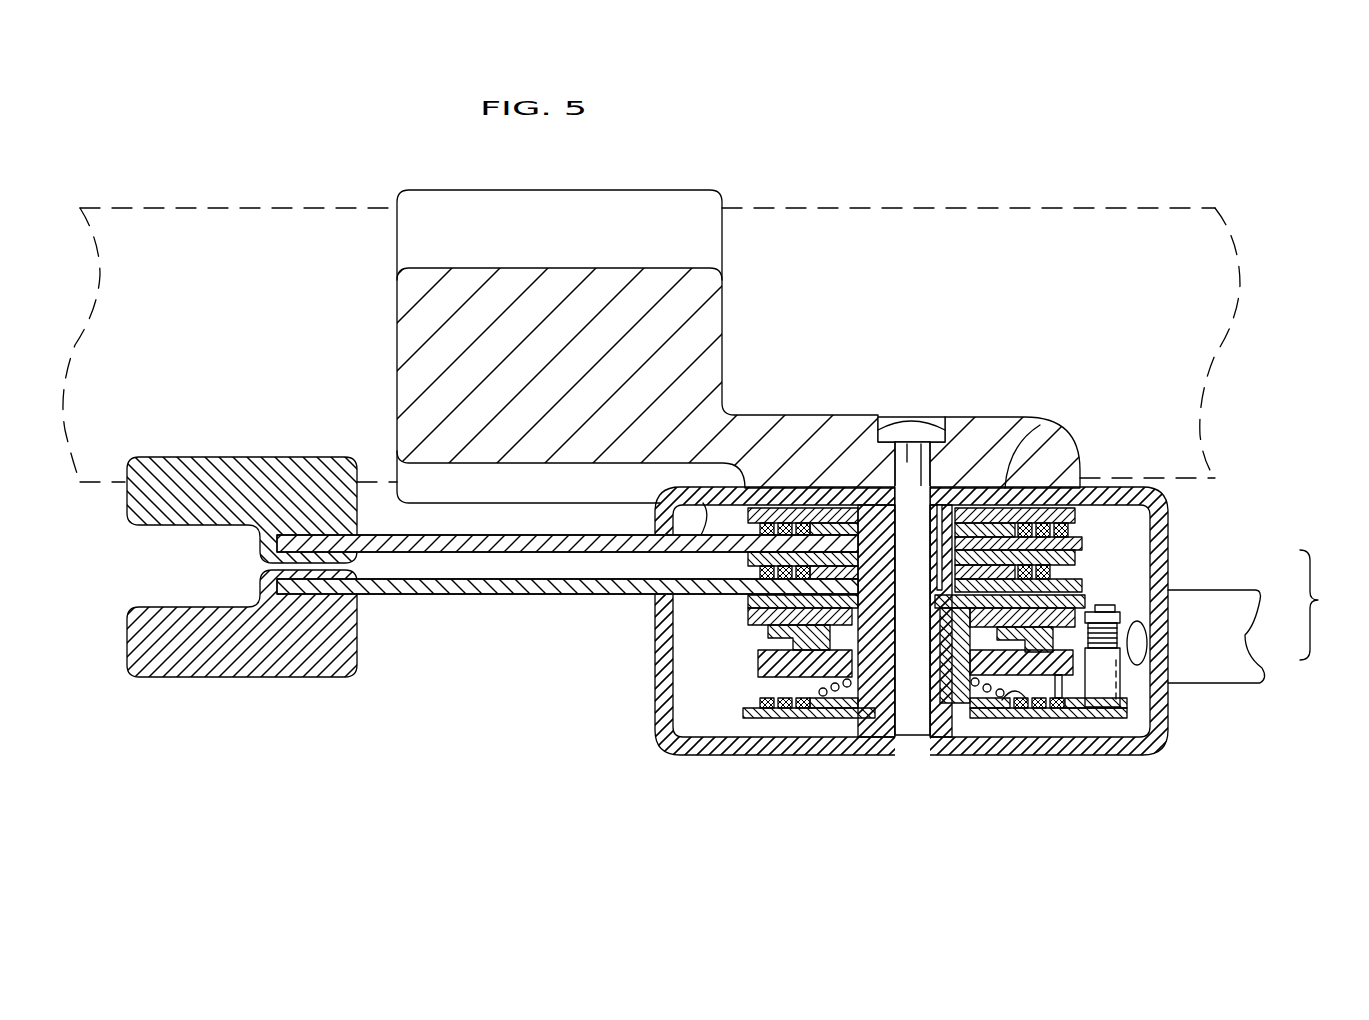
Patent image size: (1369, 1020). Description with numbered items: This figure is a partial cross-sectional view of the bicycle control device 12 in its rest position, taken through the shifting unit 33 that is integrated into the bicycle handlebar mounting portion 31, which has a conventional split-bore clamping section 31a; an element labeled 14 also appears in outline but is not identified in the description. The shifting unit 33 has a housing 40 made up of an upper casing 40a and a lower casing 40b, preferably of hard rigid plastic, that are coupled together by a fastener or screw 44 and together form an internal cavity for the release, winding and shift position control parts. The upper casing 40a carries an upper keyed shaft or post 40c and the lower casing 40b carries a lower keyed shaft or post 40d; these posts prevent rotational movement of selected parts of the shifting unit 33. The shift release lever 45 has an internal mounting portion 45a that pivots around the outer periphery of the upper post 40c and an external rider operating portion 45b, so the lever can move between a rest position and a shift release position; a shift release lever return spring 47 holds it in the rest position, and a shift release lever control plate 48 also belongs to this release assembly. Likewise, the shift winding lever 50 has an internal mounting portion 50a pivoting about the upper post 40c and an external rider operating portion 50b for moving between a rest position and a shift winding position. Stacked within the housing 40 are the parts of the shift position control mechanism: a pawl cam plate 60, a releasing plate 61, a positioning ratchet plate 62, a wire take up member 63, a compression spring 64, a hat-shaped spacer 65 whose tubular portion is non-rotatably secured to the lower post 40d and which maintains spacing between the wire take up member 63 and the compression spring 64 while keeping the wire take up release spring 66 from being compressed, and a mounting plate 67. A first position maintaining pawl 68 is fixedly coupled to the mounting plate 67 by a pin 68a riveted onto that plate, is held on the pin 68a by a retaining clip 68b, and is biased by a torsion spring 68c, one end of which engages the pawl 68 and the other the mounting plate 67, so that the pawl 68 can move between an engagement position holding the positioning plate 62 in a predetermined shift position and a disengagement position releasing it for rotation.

The bicycle control device 12 is at (931, 121).
The panel wall 14 is at (1112, 205).
The bicycle handlebar mounting portion 31 is at (690, 323).
The clamping section 31a is at (397, 244).
The shifting unit 33 is at (727, 758).
The housing 40 is at (1257, 616).
The upper casing 40a is at (1168, 556).
The lower casing 40b is at (1170, 665).
The upper keyed shaft or post 40c is at (984, 545).
The lower keyed shaft or post 40d is at (946, 680).
The fastener or screw 44 is at (894, 415).
The shift release lever 45 is at (470, 499).
The internal mounting portion 45a is at (690, 500).
The external rider operating portion 45b is at (262, 457).
The shift release lever return spring 47 is at (1082, 528).
The shift release lever control plate 48 is at (1090, 515).
The shift winding lever 50 is at (603, 569).
The internal mounting portion 50a is at (1045, 440).
The external rider operating portion 50b is at (290, 677).
The pawl cam plate 60 is at (742, 604).
The releasing member or plate 61 is at (742, 619).
The positioning (ratchet) member or plate 62 is at (748, 630).
The wire take up member 63 is at (749, 668).
The compression spring 64 is at (1027, 700).
The spacer 65 is at (850, 714).
The wire take up release spring or biasing member 66 is at (744, 694).
The mounting plate 67 is at (736, 711).
The first position maintaining member or pawl 68 is at (1153, 646).
The pin 68a is at (1123, 698).
The retaining clip 68b is at (1112, 612).
The torsion spring 68c is at (1123, 635).